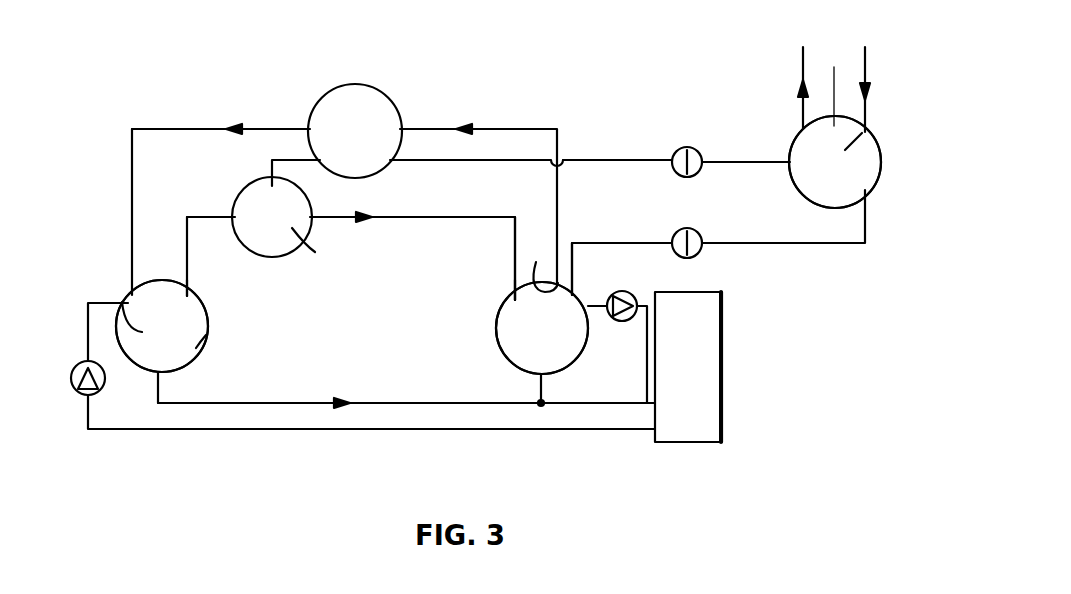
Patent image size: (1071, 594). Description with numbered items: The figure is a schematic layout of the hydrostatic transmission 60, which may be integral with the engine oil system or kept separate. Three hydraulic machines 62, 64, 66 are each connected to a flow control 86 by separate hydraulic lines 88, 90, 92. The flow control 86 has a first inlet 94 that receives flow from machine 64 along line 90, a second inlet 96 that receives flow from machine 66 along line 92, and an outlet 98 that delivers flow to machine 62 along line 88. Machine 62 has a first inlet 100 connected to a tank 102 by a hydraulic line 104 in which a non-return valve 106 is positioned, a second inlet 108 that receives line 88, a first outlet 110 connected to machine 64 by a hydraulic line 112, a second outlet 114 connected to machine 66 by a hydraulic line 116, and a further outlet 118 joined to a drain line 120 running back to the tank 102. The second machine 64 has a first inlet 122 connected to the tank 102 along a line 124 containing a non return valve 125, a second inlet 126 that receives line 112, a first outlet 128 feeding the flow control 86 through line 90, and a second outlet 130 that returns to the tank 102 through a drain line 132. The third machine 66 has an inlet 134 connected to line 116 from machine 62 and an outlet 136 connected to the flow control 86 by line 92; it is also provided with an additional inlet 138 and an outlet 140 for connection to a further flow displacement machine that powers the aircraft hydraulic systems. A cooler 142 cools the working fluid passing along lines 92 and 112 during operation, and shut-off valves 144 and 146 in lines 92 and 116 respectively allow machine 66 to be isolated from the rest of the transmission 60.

The hydrostatic transmission 60 is at (525, 72).
The hydraulic machine 62 is at (500, 328).
The hydraulic machine 64 is at (208, 328).
The hydraulic machine 66 is at (808, 185).
The flow control 86 is at (315, 252).
The hydraulic line 88 is at (513, 252).
The hydraulic line 90 is at (207, 217).
The hydraulic line 92 is at (615, 158).
The first inlet 94 is at (232, 226).
The second inlet 96 is at (272, 182).
The outlet 98 is at (312, 222).
The first inlet 100 is at (580, 318).
The tank 102 is at (705, 390).
The hydraulic line 104 is at (645, 338).
The non-return valve 106 is at (622, 322).
The second inlet 108 is at (512, 290).
The first outlet 110 is at (538, 260).
The hydraulic line 112 is at (510, 129).
The second outlet 114 is at (575, 296).
The hydraulic line 116 is at (623, 243).
The further outlet 118 is at (537, 374).
The drain line 120 is at (537, 390).
The first inlet 122 is at (162, 326).
The line 124 is at (145, 432).
The non return valve 125 is at (73, 370).
The conduit 126 is at (132, 292).
The inlet 128 is at (187, 292).
The second outlet 130 is at (160, 373).
The drain line 132 is at (243, 405).
The inlet 134 is at (862, 202).
The outlet 136 is at (790, 160).
The additional inlet 138 is at (835, 162).
The outlet 140 is at (803, 126).
The cooler 142 is at (372, 105).
The shut-off valve 144 is at (688, 146).
The shut-off valve 146 is at (702, 206).